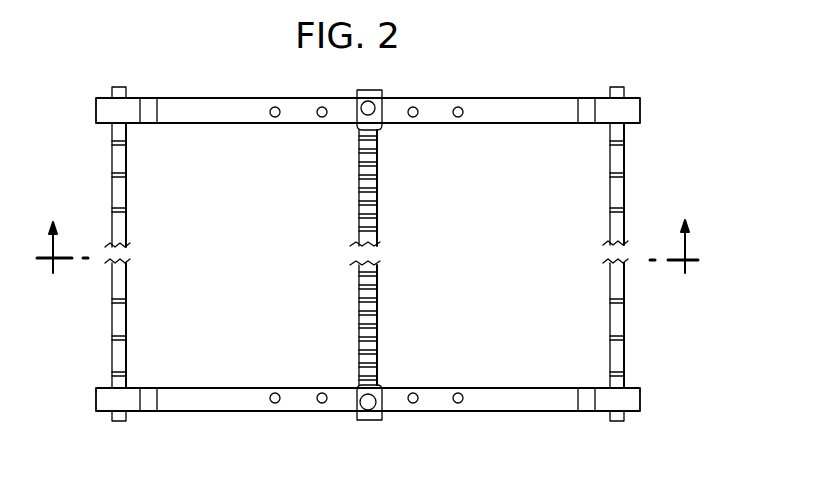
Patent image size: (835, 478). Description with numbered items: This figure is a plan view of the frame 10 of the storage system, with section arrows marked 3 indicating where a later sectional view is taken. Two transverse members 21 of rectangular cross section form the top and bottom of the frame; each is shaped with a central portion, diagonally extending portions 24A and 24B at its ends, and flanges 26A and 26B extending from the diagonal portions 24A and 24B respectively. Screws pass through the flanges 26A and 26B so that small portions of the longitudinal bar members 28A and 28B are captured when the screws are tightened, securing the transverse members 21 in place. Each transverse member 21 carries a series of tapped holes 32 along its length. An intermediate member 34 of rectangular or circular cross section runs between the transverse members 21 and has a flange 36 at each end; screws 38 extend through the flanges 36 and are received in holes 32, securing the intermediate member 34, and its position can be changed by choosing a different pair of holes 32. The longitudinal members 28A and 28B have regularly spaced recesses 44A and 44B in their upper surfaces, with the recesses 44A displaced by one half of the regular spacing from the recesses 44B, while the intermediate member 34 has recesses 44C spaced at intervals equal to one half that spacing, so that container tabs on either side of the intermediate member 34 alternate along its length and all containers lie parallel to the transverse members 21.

The frame 10 is at (208, 37).
The transverse member 21 is at (493, 98).
The diagonally extending portion 24A is at (150, 99).
The diagonally extending portion 24B is at (588, 98).
The flange 26A is at (96, 100).
The flange 26B is at (640, 100).
The longitudinal bar member 28A is at (126, 192).
The longitudinal bar member 28B is at (610, 186).
The tapped hole 32 is at (322, 118).
The intermediate member 34 is at (360, 312).
The flange 36 is at (382, 92).
The screw 38 is at (357, 92).
The recess 44A is at (112, 143).
The recess 44B is at (624, 143).
The recess 44C is at (377, 178).
The section line 3 is at (366, 246).